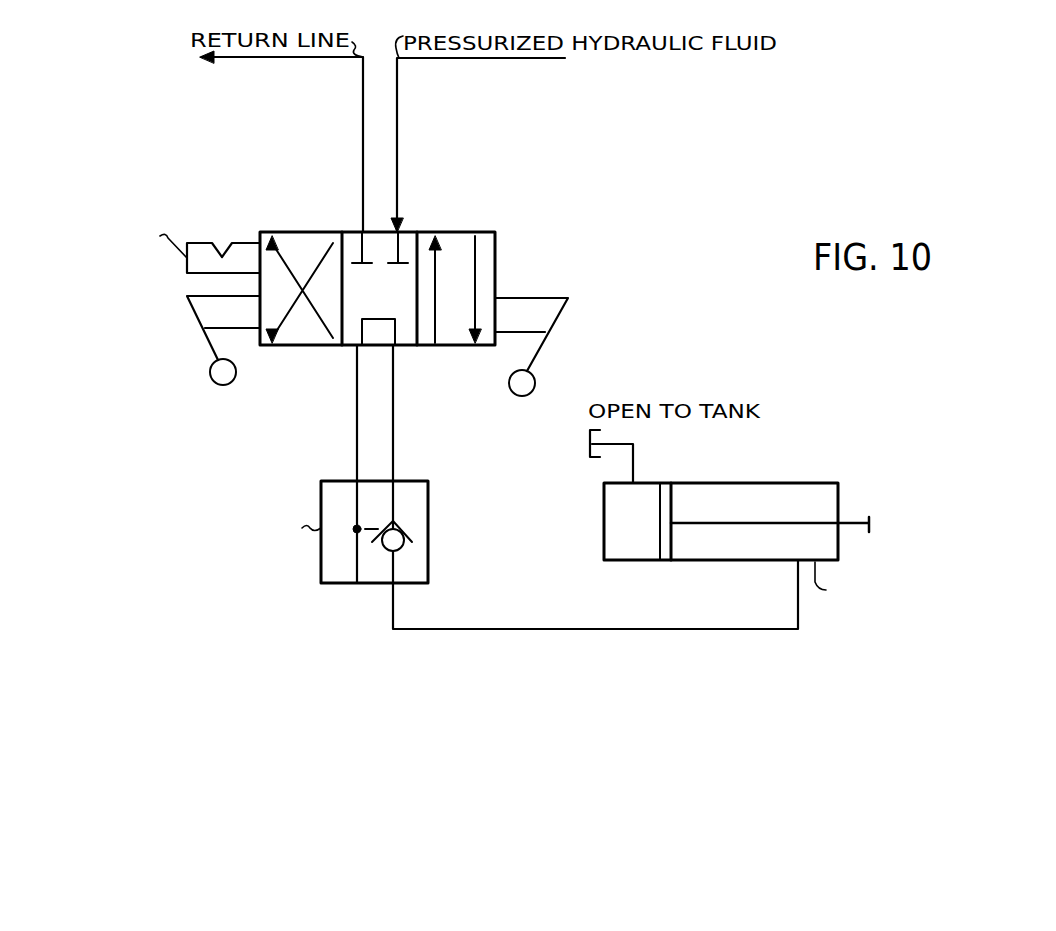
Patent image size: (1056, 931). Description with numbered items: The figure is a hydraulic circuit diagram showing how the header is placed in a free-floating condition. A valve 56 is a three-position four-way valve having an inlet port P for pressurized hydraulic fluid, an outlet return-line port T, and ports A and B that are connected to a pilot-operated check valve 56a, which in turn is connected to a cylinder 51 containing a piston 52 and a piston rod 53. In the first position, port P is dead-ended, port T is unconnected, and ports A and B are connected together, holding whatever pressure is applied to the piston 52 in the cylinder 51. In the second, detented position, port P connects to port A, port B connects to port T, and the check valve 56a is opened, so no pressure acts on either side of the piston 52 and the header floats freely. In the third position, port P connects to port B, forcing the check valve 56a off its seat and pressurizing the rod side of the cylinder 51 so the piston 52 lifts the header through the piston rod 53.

The valve 56 is at (472, 232).
The pilot-operated check valve 56a is at (415, 481).
The cylinder 51 is at (757, 483).
The piston 52 is at (665, 484).
The piston rod 53 is at (850, 523).